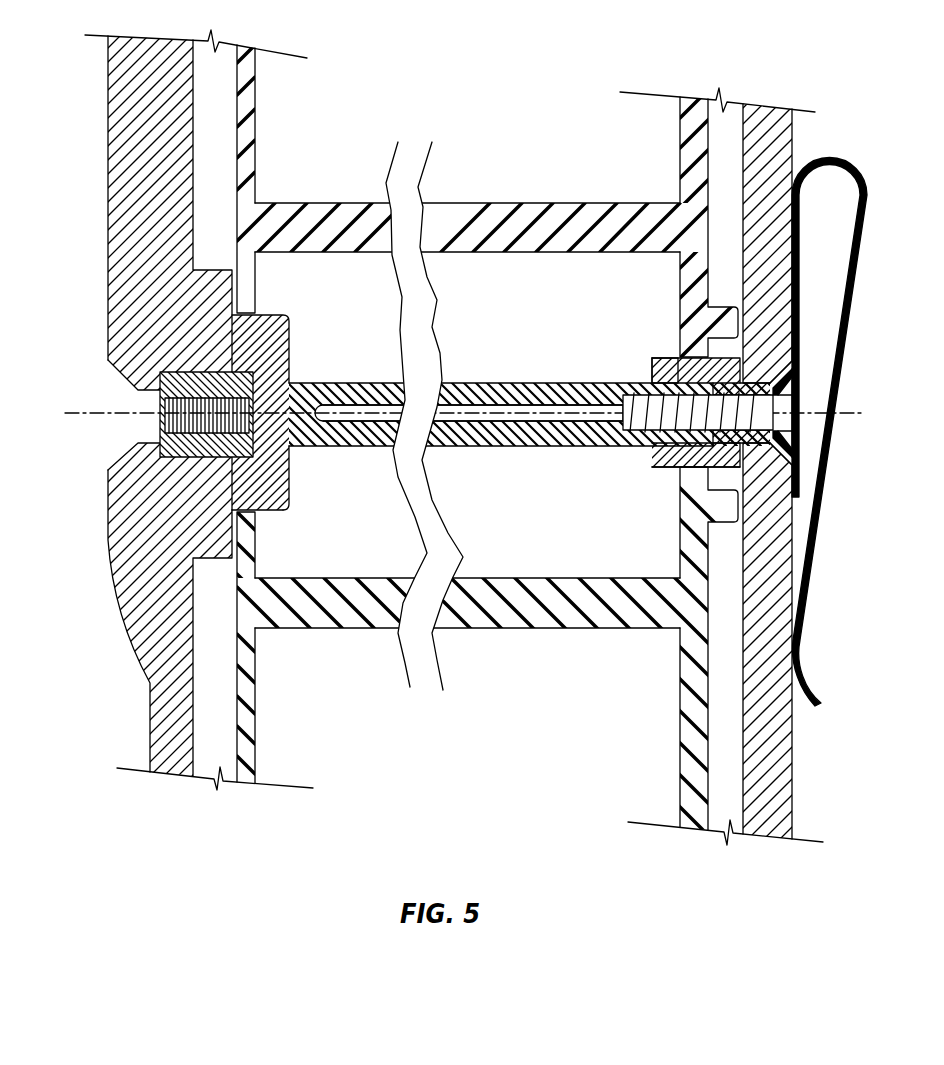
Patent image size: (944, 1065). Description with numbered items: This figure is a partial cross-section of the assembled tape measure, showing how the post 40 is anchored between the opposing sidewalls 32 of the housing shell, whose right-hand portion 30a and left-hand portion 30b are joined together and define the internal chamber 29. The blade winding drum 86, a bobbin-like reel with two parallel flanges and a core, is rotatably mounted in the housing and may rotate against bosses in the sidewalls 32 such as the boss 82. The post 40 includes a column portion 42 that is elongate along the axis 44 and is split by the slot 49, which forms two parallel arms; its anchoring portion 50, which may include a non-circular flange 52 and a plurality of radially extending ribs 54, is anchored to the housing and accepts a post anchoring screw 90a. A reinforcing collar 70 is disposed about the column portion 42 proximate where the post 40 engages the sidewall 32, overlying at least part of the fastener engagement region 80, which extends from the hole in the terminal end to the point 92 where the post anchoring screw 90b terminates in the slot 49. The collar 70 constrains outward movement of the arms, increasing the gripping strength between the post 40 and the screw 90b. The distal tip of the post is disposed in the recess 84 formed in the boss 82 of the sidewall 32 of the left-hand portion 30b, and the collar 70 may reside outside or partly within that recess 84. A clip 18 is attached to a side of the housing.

The clip 18 is at (817, 558).
The internal chamber 29 is at (218, 150).
The right-hand portion 30a is at (793, 742).
The left-hand portion 30b is at (150, 720).
The sidewall 32 is at (175, 108).
The post 40 is at (483, 458).
The column portion 42 is at (393, 382).
The axis 44 is at (88, 418).
The slot 49 is at (507, 382).
The anchoring portion 50 is at (302, 468).
The flange 52 is at (288, 347).
The ribs 54 is at (170, 372).
The reinforcing collar 70 is at (643, 383).
The fastener engagement region 80 is at (627, 452).
The boss 82 is at (650, 365).
The recess 84 is at (675, 365).
The blade winding drum 86 is at (560, 215).
The post anchoring screw 90a is at (120, 392).
The post anchoring screw 90b is at (787, 420).
The point 92 is at (606, 445).